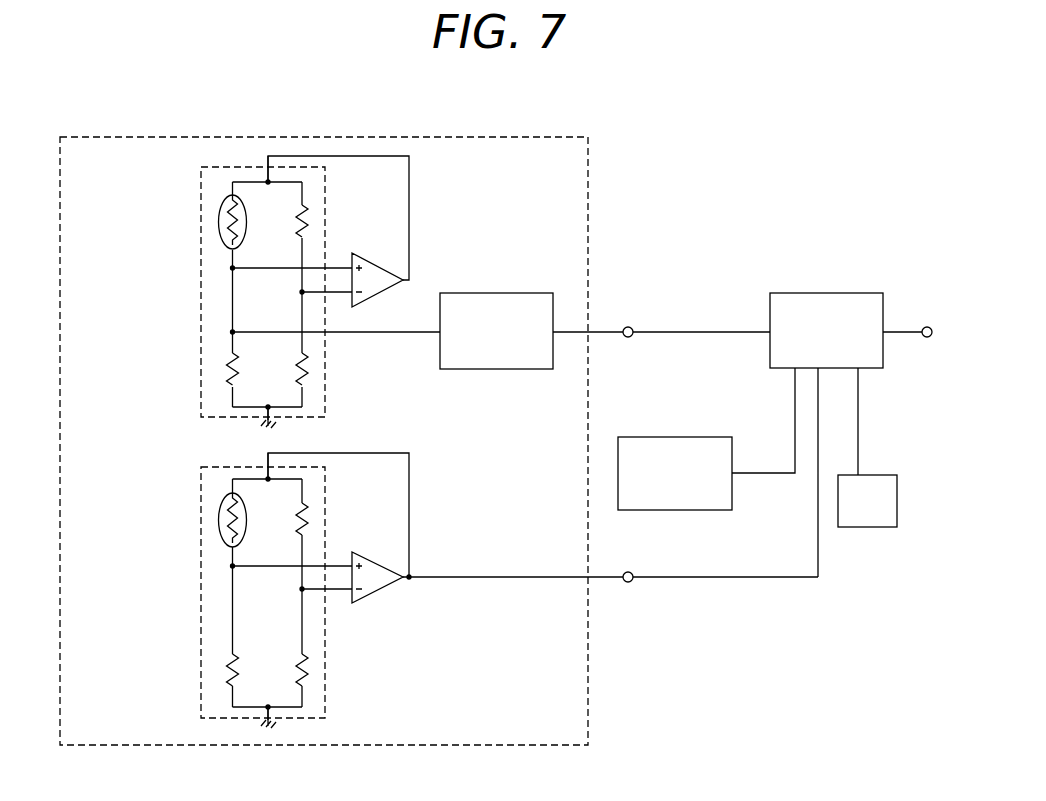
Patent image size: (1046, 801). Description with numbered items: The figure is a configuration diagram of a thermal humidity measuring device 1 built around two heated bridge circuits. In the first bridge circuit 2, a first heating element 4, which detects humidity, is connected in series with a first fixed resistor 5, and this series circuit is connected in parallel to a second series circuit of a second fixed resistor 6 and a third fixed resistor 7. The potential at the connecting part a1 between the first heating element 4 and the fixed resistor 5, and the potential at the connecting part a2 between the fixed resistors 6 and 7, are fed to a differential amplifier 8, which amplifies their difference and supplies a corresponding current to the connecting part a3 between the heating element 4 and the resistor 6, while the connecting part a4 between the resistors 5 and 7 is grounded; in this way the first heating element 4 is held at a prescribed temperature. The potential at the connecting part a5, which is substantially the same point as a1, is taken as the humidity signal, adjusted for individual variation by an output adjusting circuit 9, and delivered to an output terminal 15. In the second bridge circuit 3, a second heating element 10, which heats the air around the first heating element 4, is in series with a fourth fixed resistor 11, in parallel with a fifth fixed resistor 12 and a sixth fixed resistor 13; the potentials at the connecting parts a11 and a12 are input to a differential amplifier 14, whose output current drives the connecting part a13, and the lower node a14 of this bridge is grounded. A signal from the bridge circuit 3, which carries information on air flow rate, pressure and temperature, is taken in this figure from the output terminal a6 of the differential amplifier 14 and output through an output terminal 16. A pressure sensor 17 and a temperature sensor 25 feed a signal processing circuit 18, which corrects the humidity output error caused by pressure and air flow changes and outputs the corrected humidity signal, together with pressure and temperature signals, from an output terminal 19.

The thermal humidity measuring device 1 is at (588, 165).
The first bridge circuit 2 is at (325, 397).
The second bridge circuit 3 is at (325, 700).
The first heating element 4 is at (218, 218).
The first fixed resistor 5 is at (225, 372).
The second fixed resistor 6 is at (312, 220).
The third fixed resistor 7 is at (312, 372).
The differential amplifier 8 is at (375, 295).
The output adjusting circuit 9 is at (500, 293).
The second heating element 10 is at (218, 518).
The fourth fixed resistor 11 is at (225, 672).
The fifth fixed resistor 12 is at (312, 518).
The sixth fixed resistor 13 is at (312, 672).
The differential amplifier 14 is at (378, 592).
The output terminal 15 is at (628, 337).
The output terminal 16 is at (628, 582).
The pressure sensor 17 is at (675, 510).
The signal processing circuit 18 is at (820, 293).
The output terminal 19 is at (927, 337).
The temperature sensor 25 is at (865, 527).
The connecting part a1 is at (232, 268).
The connecting part a2 is at (302, 292).
The connecting part a3 is at (268, 183).
The connecting part a4 is at (268, 406).
The connecting part a5 is at (232, 332).
The output terminal of differential amplifier a6 is at (412, 574).
The connecting part a11 is at (232, 566).
The connecting part a12 is at (302, 589).
The connecting part a13 is at (268, 480).
The node a14 is at (268, 706).